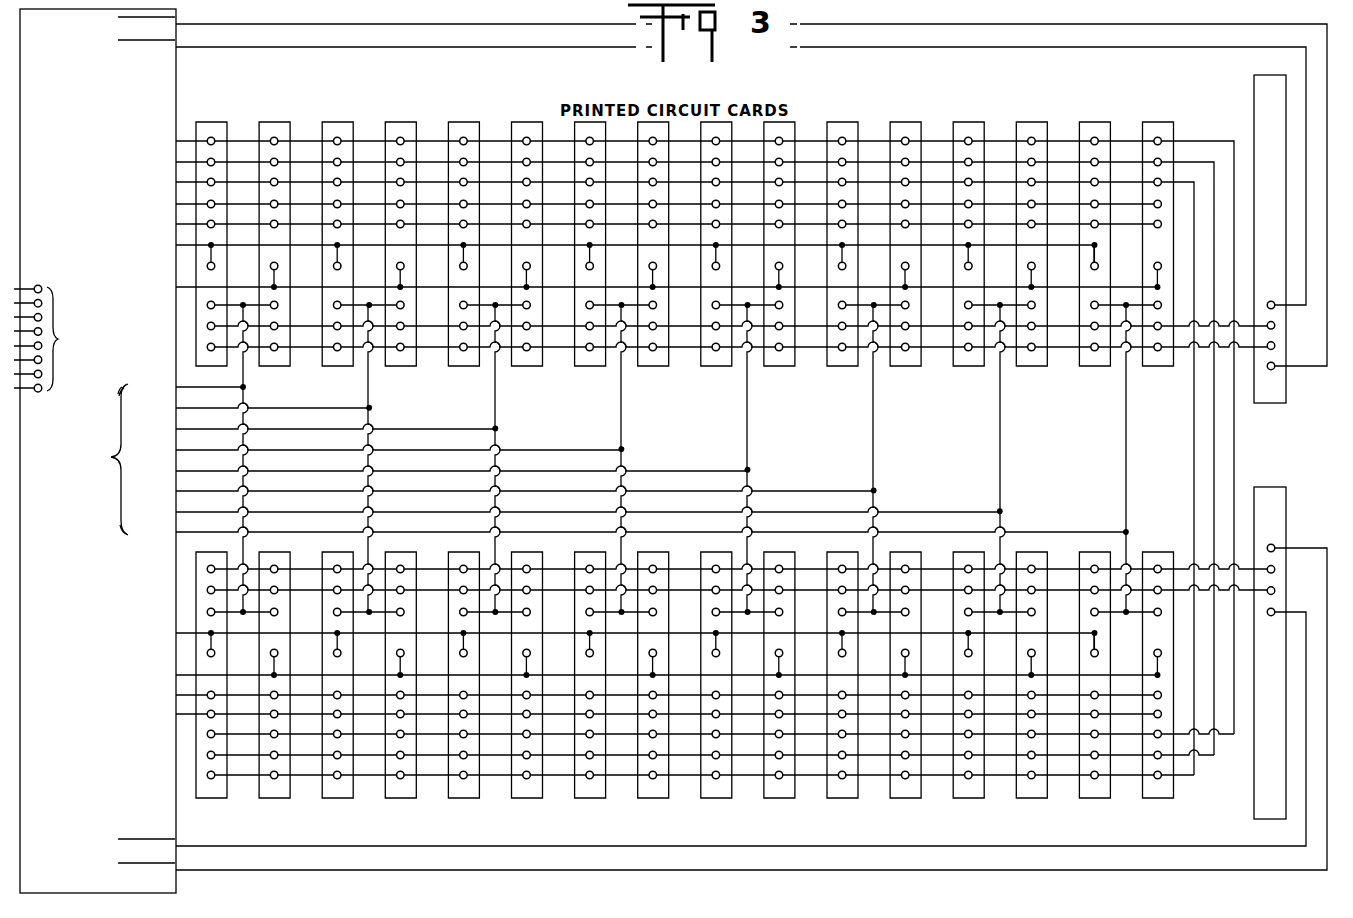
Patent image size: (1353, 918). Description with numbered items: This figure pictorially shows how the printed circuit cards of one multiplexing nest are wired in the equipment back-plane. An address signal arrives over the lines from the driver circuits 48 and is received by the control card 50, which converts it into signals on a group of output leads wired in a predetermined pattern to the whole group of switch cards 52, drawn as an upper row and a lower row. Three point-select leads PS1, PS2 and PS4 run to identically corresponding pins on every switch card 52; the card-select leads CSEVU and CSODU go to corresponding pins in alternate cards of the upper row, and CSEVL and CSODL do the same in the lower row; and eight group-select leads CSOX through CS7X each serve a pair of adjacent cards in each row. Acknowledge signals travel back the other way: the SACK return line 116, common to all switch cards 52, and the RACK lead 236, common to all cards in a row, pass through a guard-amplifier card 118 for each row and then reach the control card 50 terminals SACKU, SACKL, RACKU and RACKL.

The control card 50 is at (125, 114).
The driver circuits 48 is at (143, 358).
The switch cards 52 is at (320, 88).
The return line 116 is at (452, 48).
The guard-amplifier card 118 is at (1254, 100).
The multiplexing nest lead 236 is at (446, 24).